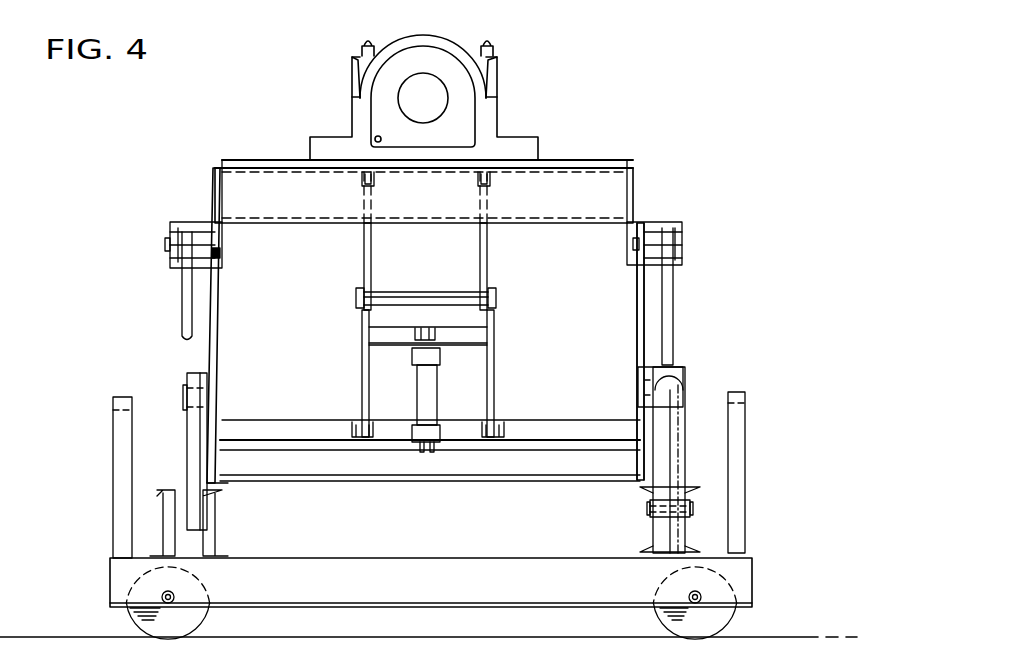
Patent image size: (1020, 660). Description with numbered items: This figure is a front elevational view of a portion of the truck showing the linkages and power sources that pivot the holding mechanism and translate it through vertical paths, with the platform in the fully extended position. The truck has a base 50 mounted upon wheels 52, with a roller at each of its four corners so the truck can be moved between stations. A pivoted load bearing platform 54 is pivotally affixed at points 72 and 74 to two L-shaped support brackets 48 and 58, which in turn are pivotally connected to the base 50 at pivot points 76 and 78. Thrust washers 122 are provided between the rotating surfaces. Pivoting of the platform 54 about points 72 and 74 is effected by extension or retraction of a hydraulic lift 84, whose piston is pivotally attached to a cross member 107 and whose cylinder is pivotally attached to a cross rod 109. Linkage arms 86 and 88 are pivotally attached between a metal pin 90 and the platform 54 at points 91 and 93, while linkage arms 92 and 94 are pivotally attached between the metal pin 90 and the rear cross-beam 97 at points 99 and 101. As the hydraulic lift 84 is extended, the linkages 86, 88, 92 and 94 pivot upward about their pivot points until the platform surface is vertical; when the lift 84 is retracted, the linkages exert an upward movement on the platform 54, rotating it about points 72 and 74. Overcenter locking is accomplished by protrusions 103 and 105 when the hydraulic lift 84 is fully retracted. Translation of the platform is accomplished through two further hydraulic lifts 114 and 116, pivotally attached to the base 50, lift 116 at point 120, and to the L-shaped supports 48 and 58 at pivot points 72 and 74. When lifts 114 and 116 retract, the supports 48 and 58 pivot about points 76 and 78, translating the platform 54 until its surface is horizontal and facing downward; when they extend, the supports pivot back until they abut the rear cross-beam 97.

The L-shaped support bracket 48 is at (216, 346).
The base 50 is at (305, 556).
The wheels 52 is at (193, 612).
The load bearing platform 54 is at (592, 170).
The L-shaped support bracket 58 is at (637, 310).
The pivot point 72 is at (219, 250).
The pivot point 74 is at (633, 243).
The pivot point 76 is at (185, 392).
The pivot point 78 is at (638, 382).
The hydraulic lift 84 is at (420, 405).
The linkage arm 86 is at (364, 262).
The linkage arm 88 is at (487, 262).
The metal pin 90 is at (430, 295).
The pivot point 91 is at (361, 184).
The linkage arm 92 is at (362, 360).
The pivot point 93 is at (490, 184).
The linkage arm 94 is at (494, 377).
The rear cross-beam 97 is at (546, 420).
The pivot point 99 is at (352, 425).
The pivot point 101 is at (506, 430).
The protrusion 103 is at (356, 298).
The protrusion 105 is at (496, 298).
The cross member 107 is at (390, 350).
The cross rod 109 is at (446, 450).
The hydraulic lift 114 is at (182, 306).
The hydraulic lift 116 is at (670, 400).
The pivot point 120 is at (650, 508).
The thrust washers 122 is at (218, 266).